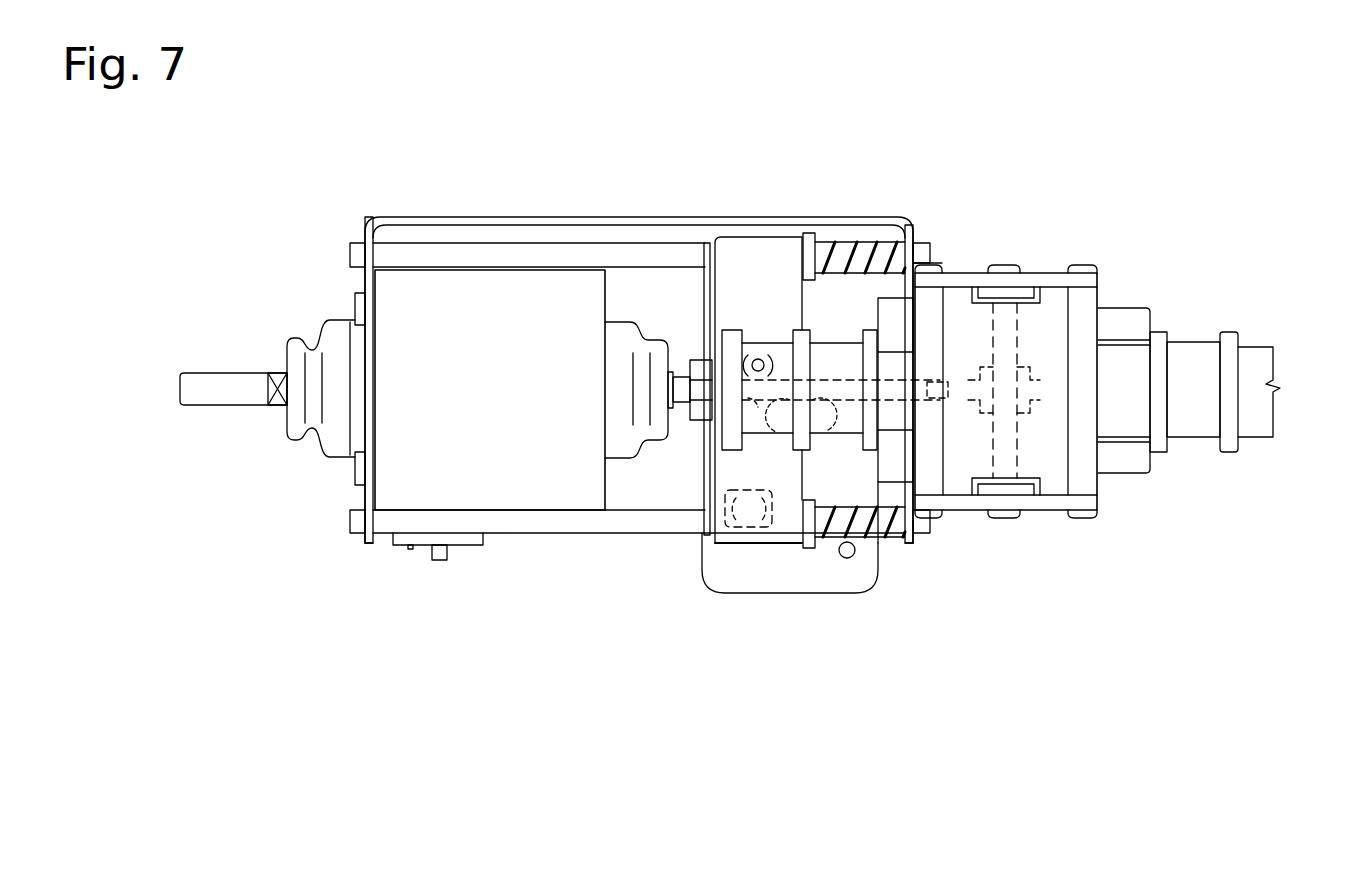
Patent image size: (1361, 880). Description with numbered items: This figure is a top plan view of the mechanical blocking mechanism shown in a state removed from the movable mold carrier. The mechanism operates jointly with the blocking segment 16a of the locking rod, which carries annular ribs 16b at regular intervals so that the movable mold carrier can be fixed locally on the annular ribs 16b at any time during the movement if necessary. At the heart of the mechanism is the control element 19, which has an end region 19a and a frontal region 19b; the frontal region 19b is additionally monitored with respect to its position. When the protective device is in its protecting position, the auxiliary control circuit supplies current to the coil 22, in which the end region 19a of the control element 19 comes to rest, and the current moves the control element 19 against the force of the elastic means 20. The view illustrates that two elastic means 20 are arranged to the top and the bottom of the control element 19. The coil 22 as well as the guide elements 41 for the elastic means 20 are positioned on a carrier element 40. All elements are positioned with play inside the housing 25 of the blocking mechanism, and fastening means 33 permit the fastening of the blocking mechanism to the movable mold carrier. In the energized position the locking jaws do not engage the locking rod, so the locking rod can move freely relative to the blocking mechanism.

The blocking segment 16a is at (1255, 427).
The annular ribs 16b is at (1228, 440).
The control element 19 is at (678, 395).
The end region 19a is at (230, 390).
The frontal region 19b is at (883, 555).
The elastic means 20 is at (834, 243).
The coil 22 is at (503, 404).
The housing 25 is at (963, 492).
The fastening means 33 is at (1125, 460).
The carrier element 40 is at (456, 222).
The guide elements 41 is at (565, 253).